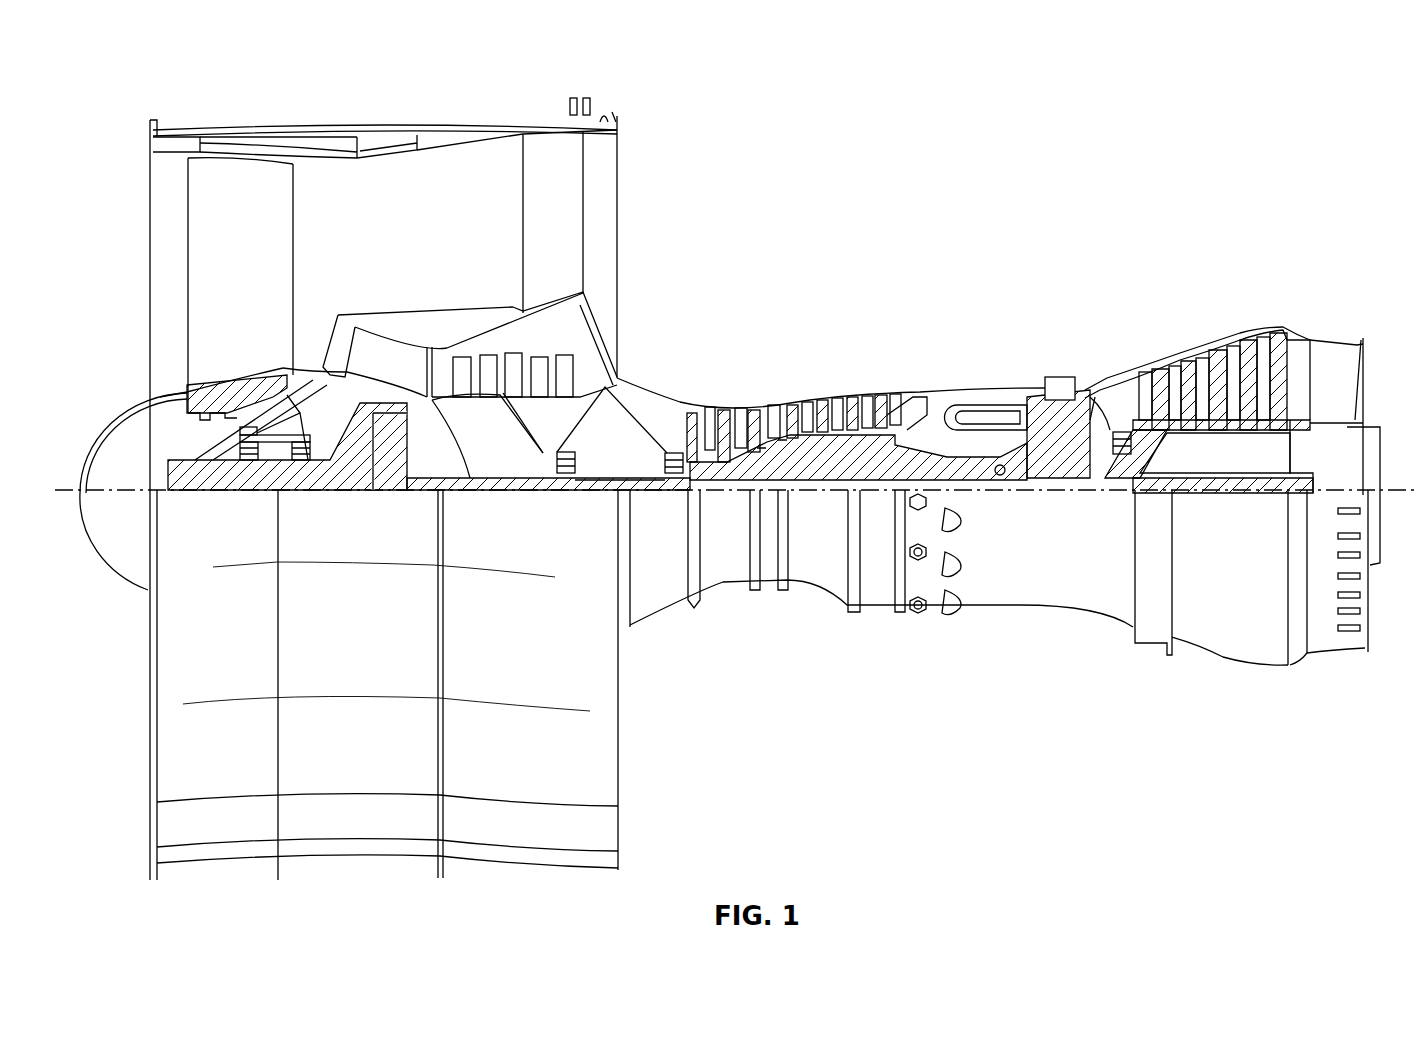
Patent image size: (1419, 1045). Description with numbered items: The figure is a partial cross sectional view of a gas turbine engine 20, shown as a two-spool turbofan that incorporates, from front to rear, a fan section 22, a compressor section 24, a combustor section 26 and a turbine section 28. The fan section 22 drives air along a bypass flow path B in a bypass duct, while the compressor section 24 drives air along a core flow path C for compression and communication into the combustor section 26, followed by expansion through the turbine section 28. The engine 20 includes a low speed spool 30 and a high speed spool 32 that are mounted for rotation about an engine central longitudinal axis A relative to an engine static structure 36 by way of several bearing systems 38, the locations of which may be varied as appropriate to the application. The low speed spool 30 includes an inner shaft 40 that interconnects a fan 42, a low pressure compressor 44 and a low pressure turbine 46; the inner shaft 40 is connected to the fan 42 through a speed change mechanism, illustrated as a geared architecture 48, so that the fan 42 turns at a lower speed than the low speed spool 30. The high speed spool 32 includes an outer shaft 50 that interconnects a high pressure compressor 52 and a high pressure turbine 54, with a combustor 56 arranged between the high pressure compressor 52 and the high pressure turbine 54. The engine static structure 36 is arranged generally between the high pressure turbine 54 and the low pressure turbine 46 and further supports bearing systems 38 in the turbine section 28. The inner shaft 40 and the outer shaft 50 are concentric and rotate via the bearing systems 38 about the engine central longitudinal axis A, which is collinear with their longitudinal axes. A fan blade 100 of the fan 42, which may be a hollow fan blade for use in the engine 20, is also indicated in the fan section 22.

The gas turbine engine 20 is at (1190, 165).
The fan section 22 is at (257, 118).
The compressor section 24 is at (808, 350).
The combustor section 26 is at (965, 352).
The turbine section 28 is at (1120, 332).
The low speed spool 30 is at (840, 497).
The high speed spool 32 is at (890, 448).
The engine static structure 36 is at (878, 612).
The bearing systems 38 is at (250, 460).
The inner shaft 40 is at (632, 500).
The fan 42 is at (236, 256).
The low pressure compressor 44 is at (540, 370).
The low pressure turbine 46 is at (1222, 350).
The geared architecture 48 is at (395, 470).
The outer shaft 50 is at (1000, 475).
The high pressure compressor 52 is at (800, 458).
The high pressure turbine 54 is at (1060, 398).
The combustor 56 is at (980, 410).
The fan blade 100 is at (205, 283).
The engine central longitudinal axis A is at (1390, 488).
The bypass flow path B is at (470, 225).
The core flow path C is at (340, 355).